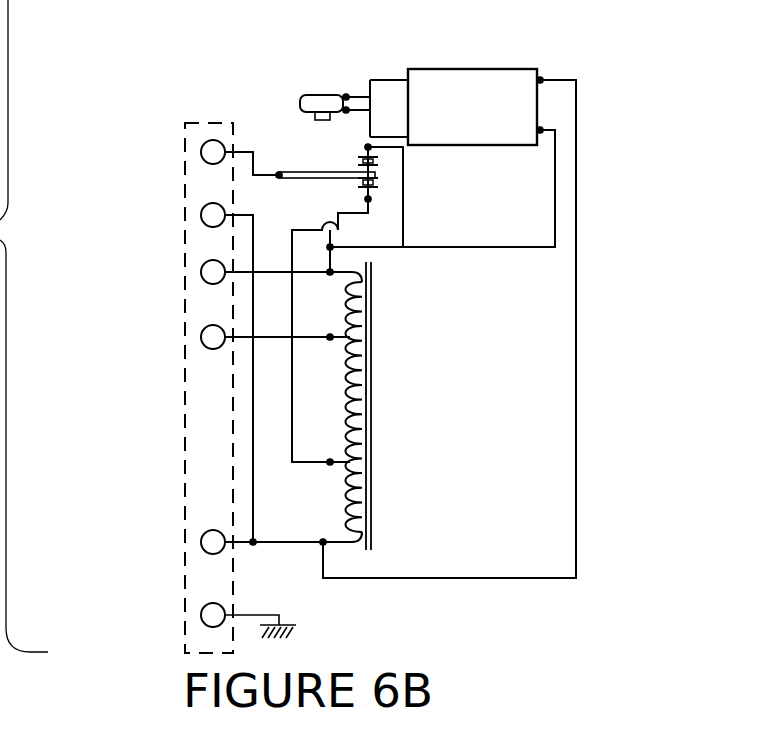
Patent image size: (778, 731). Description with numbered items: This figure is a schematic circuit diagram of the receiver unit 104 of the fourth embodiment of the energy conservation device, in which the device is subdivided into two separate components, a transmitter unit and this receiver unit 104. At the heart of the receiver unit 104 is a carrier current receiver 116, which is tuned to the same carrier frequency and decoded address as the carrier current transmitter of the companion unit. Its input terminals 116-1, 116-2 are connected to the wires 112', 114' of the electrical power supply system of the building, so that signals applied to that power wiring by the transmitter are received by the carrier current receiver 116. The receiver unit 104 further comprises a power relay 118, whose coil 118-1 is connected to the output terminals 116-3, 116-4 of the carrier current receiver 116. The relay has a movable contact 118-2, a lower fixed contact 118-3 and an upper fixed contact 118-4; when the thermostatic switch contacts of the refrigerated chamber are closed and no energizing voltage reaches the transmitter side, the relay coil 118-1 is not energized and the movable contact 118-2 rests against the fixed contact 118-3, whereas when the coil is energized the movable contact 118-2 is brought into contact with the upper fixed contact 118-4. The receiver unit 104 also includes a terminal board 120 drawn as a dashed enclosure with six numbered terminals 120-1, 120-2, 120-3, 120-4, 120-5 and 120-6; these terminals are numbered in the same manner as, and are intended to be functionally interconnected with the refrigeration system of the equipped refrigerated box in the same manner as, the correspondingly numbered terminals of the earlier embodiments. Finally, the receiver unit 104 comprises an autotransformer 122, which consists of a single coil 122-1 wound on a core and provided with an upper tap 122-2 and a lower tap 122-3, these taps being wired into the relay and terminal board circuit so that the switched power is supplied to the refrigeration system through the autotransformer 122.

The receiver unit 104 is at (580, 650).
The wire of the electrical power supply system 112' is at (521, 322).
The wire of the electrical power supply system 114' is at (525, 188).
The carrier current receiver 116 is at (514, 62).
The input terminal of carrier current receiver 116-1 is at (546, 79).
The input terminal of carrier current receiver 116-2 is at (543, 130).
The output terminal of carrier current receiver 116-3 is at (406, 78).
The output terminal of carrier current receiver 116-4 is at (408, 135).
The power relay 118 is at (318, 154).
The coil of power relay 118-1 is at (303, 97).
The movable contact of power relay 118-2 is at (348, 176).
The fixed contact of power relay 118-3 is at (372, 196).
The upper fixed contact of power relay 118-4 is at (372, 151).
The terminal board 120 is at (204, 124).
The terminal of terminal board 120-1 is at (201, 615).
The terminal of terminal board 120-2 is at (201, 542).
The terminal of terminal board 120-3 is at (201, 337).
The terminal of terminal board 120-4 is at (201, 272).
The terminal of terminal board 120-5 is at (201, 215).
The terminal of terminal board 120-6 is at (201, 152).
The autotransformer 122 is at (395, 483).
The coil of autotransformer 122-1 is at (371, 370).
The upper tap 122-2 is at (332, 335).
The lower tap 122-3 is at (332, 461).